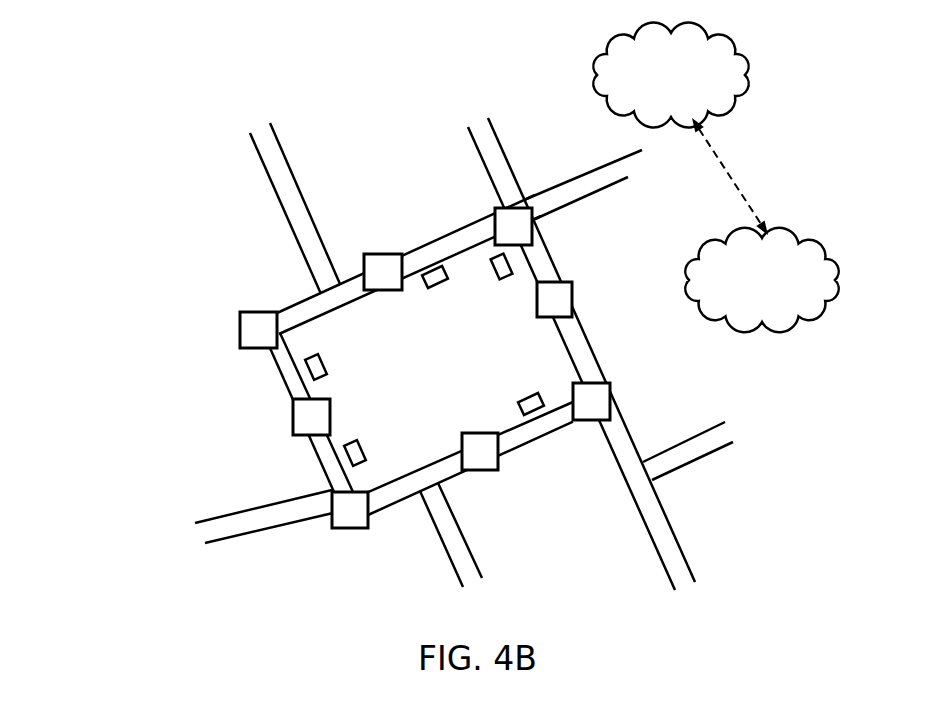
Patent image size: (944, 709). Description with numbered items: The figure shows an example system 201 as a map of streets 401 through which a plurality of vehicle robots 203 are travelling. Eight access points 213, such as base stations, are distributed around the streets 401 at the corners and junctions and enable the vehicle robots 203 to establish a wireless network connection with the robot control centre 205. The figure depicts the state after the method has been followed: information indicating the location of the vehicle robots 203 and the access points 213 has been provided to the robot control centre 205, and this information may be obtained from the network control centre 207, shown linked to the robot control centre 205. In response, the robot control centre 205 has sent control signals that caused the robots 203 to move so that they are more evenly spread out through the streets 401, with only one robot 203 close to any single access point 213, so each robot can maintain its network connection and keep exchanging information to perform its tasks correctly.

The system 201 is at (539, 573).
The vehicle robots 203 is at (507, 278).
The robot control centre 205 is at (785, 238).
The network control centre 207 is at (748, 78).
The access points 213 is at (385, 254).
The streets 401 is at (496, 133).